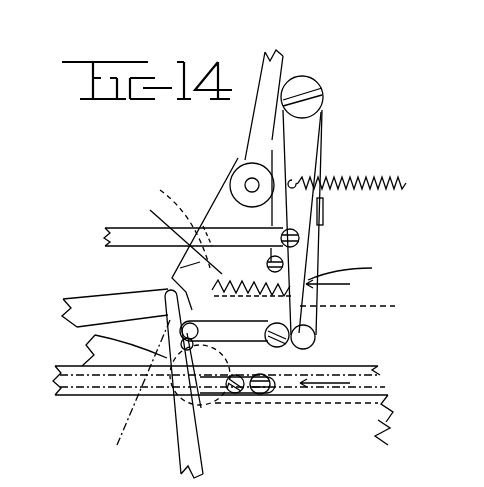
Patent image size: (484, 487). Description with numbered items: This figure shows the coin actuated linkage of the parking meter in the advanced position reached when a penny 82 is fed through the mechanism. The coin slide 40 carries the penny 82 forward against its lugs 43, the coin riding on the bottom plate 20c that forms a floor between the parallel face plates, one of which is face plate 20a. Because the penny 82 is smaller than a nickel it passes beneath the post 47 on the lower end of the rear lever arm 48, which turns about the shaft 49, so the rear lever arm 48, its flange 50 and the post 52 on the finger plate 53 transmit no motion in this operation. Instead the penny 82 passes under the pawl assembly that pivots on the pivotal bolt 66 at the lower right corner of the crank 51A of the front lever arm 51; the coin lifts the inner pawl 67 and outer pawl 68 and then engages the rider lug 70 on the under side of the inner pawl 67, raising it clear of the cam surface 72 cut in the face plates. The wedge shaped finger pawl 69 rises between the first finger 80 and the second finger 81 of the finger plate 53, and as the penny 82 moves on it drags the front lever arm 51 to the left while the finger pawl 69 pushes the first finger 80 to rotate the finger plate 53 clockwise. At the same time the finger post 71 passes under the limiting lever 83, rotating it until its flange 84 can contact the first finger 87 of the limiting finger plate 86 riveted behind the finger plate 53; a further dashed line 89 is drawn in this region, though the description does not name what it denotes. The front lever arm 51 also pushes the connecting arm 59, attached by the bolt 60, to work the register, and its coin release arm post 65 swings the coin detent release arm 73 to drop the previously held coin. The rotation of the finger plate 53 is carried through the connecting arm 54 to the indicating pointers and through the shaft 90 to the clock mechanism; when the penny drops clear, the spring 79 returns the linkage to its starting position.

The connecting arm 54 is at (279, 60).
The shaft 90 is at (248, 182).
The finger plate 53 is at (222, 215).
The shaft 49 is at (306, 90).
The front lever arm 51 is at (300, 153).
The post 52 is at (305, 265).
The post 47 is at (310, 335).
The spring 79 is at (369, 181).
The flange 50 is at (325, 213).
The connecting arm 59 is at (122, 229).
The bolt 60 is at (300, 236).
The rear lever arm 48 is at (306, 258).
The second finger 81 is at (300, 298).
The first finger 80 is at (345, 280).
The wedge shaped finger pawl 69 is at (356, 302).
The limiting finger plate 86 is at (203, 226).
The first finger 87 is at (177, 237).
The path 89 is at (178, 220).
The flange 84 is at (180, 256).
The limiting lever 83 is at (83, 313).
The inner pawl 67 is at (172, 292).
The coin release arm post 65 is at (182, 331).
The pivotal bolt 66 is at (284, 341).
The penny 82 is at (192, 342).
The finger post 71 is at (190, 338).
The rider lug 70 is at (172, 392).
The coin detent release arm 73 is at (186, 447).
The crank 51A is at (193, 405).
The cam surface 72 is at (138, 389).
The coin slide 40 is at (63, 393).
The face plate 20a is at (333, 403).
The bottom plate 20c is at (401, 434).
The outer pawl 68 is at (246, 389).
The lugs 43 is at (254, 395).